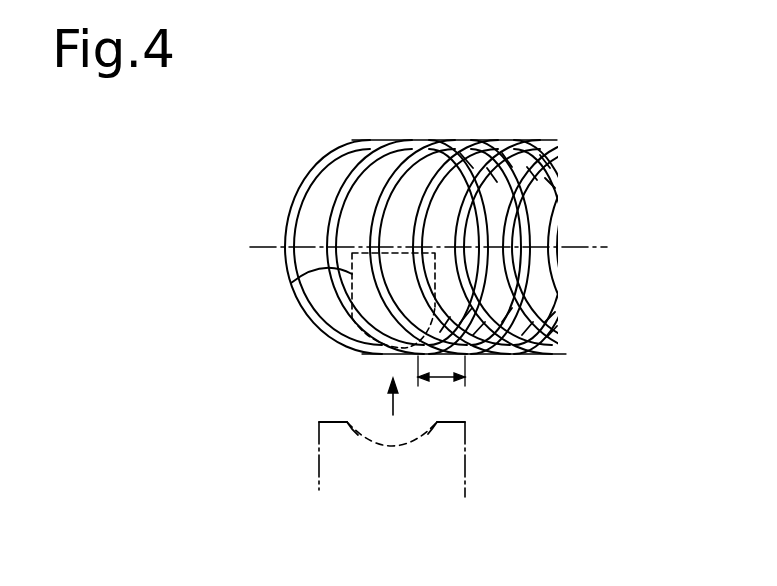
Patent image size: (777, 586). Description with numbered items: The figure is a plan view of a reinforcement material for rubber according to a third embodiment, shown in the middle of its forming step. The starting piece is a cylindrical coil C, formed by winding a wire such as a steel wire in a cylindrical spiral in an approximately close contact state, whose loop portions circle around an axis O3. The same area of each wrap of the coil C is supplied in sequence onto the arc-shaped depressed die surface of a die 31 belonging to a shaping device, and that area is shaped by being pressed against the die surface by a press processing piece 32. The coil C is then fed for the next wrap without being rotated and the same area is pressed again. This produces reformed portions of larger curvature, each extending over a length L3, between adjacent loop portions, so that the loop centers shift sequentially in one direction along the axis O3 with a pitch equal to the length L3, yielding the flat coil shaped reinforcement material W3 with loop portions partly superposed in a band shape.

The cylindrical coil C is at (300, 183).
The reinforcement material W3 is at (468, 140).
The die 31 is at (292, 300).
The press processing piece 32 is at (318, 443).
The axis O3 is at (447, 245).
The length of the reformed portion L3 is at (441, 383).